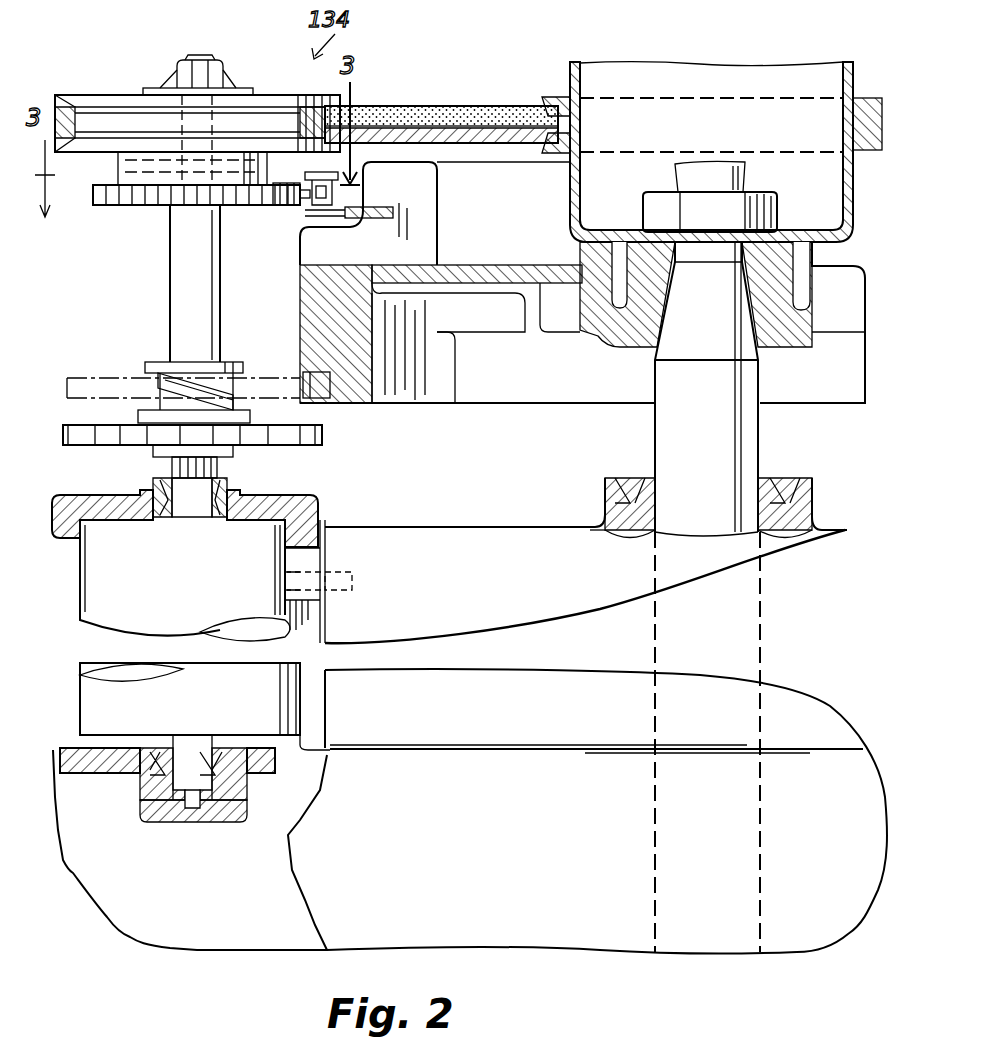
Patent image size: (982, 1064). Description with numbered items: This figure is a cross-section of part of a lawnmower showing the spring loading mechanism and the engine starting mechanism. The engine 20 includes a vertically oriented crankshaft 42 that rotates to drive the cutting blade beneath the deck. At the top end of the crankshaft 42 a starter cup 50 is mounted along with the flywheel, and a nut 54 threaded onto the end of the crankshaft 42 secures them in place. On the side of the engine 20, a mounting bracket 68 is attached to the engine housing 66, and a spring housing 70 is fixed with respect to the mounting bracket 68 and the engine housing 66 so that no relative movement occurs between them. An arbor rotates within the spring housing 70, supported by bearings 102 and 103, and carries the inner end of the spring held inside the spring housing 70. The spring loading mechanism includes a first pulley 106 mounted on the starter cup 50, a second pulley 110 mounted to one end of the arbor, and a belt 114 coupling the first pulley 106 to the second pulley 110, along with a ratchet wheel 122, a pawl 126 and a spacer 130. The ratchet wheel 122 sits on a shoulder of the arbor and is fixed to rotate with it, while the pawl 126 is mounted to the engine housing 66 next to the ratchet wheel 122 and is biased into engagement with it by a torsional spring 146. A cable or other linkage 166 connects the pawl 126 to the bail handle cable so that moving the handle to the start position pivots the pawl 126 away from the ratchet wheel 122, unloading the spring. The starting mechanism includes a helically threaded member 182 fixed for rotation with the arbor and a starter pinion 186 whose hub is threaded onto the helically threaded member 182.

The engine 20 is at (576, 512).
The crankshaft 42 is at (655, 379).
The starter cup 50 is at (588, 72).
The nut 54 is at (770, 190).
The engine housing 66 is at (508, 583).
The mounting bracket 68 is at (80, 505).
The spring housing 70 is at (80, 586).
The bearing 102 is at (152, 795).
The bearing 103 is at (228, 490).
The first pulley 106 is at (548, 98).
The second pulley 110 is at (132, 78).
The belt 114 is at (452, 106).
The ratchet wheel 122 is at (100, 206).
The pawl 126 is at (300, 203).
The spacer 130 is at (165, 186).
The torsional spring 146 is at (340, 182).
The linkage 166 is at (400, 211).
The helically threaded member 182 is at (242, 362).
The starter pinion 186 is at (105, 428).